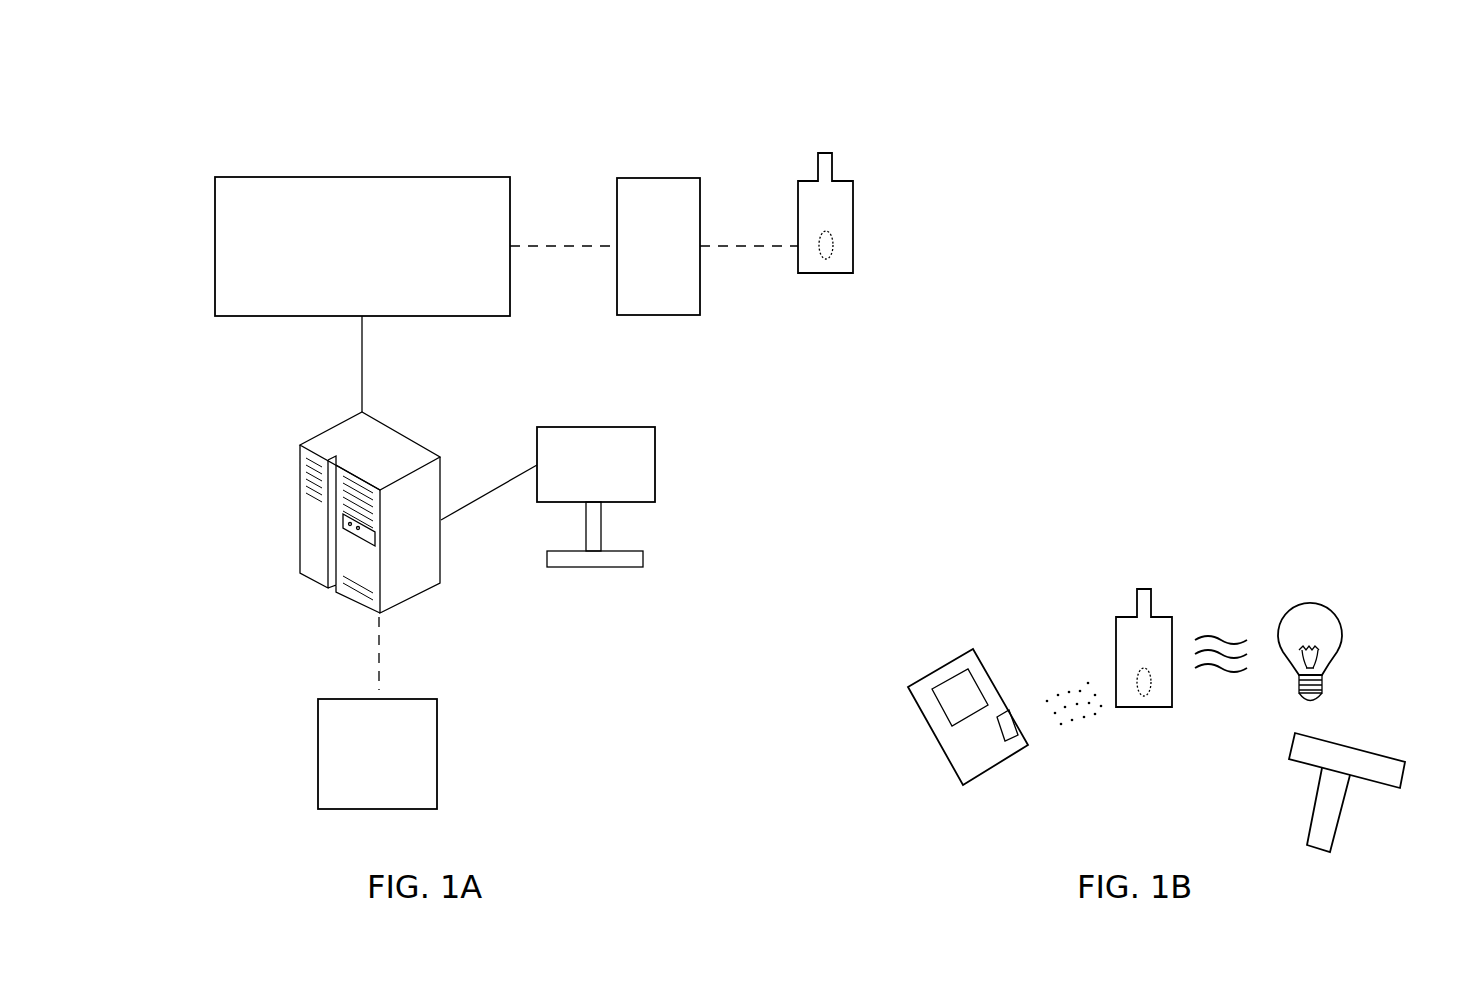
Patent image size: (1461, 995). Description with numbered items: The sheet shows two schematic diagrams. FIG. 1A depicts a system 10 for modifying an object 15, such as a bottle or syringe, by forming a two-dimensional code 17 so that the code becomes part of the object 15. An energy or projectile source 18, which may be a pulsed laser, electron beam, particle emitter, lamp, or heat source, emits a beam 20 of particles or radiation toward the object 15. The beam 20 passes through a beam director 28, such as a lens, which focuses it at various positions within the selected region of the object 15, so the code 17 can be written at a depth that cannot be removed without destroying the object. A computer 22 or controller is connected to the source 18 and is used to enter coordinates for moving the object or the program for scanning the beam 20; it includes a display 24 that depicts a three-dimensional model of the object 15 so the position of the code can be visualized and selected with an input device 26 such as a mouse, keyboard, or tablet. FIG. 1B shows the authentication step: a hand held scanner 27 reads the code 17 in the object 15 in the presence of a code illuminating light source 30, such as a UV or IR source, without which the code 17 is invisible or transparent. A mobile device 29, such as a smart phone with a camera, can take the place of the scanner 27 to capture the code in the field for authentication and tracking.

In FIG. 1A, the system 10 is at (220, 106).
In FIG. 1A, the object 15 is at (828, 273).
In FIG. 1B, the object 15 is at (1141, 707).
In FIG. 1A, the 2D code 17 is at (833, 246).
In FIG. 1B, the 2D code 17 is at (1150, 683).
In FIG. 1A, the energy or projectile source 18 is at (310, 177).
In FIG. 1A, the beam 20 is at (600, 245).
In FIG. 1A, the computer 22 is at (312, 440).
In FIG. 1A, the display 24 is at (655, 483).
In FIG. 1A, the input device 26 is at (437, 753).
In FIG. 1B, the hand held scanner 27 is at (1393, 762).
In FIG. 1A, the beam director 28 is at (660, 178).
In FIG. 1B, the mobile device 29 is at (1005, 707).
In FIG. 1B, the code illuminating light source 30 is at (1337, 620).